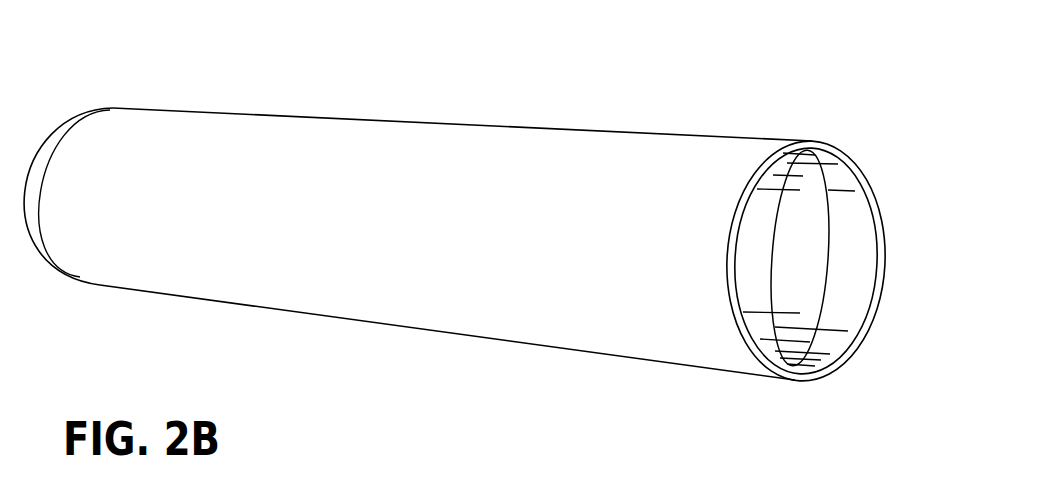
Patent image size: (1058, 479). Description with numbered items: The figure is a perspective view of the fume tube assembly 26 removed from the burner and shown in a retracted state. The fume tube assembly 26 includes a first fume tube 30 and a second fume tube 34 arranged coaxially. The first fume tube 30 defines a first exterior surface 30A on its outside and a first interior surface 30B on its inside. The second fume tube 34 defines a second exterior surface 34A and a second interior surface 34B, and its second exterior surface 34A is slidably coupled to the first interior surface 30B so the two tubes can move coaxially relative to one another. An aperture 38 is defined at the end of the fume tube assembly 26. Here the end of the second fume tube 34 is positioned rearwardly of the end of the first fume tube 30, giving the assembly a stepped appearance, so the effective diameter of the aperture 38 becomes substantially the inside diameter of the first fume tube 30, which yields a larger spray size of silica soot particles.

The fume tube assembly 26 is at (593, 102).
The first fume tube 30 is at (757, 140).
The first exterior surface 30A is at (600, 272).
The first interior surface 30B is at (850, 242).
The second fume tube 34 is at (781, 227).
The second exterior surface 34A is at (40, 153).
The second interior surface 34B is at (773, 327).
The aperture 38 is at (843, 292).